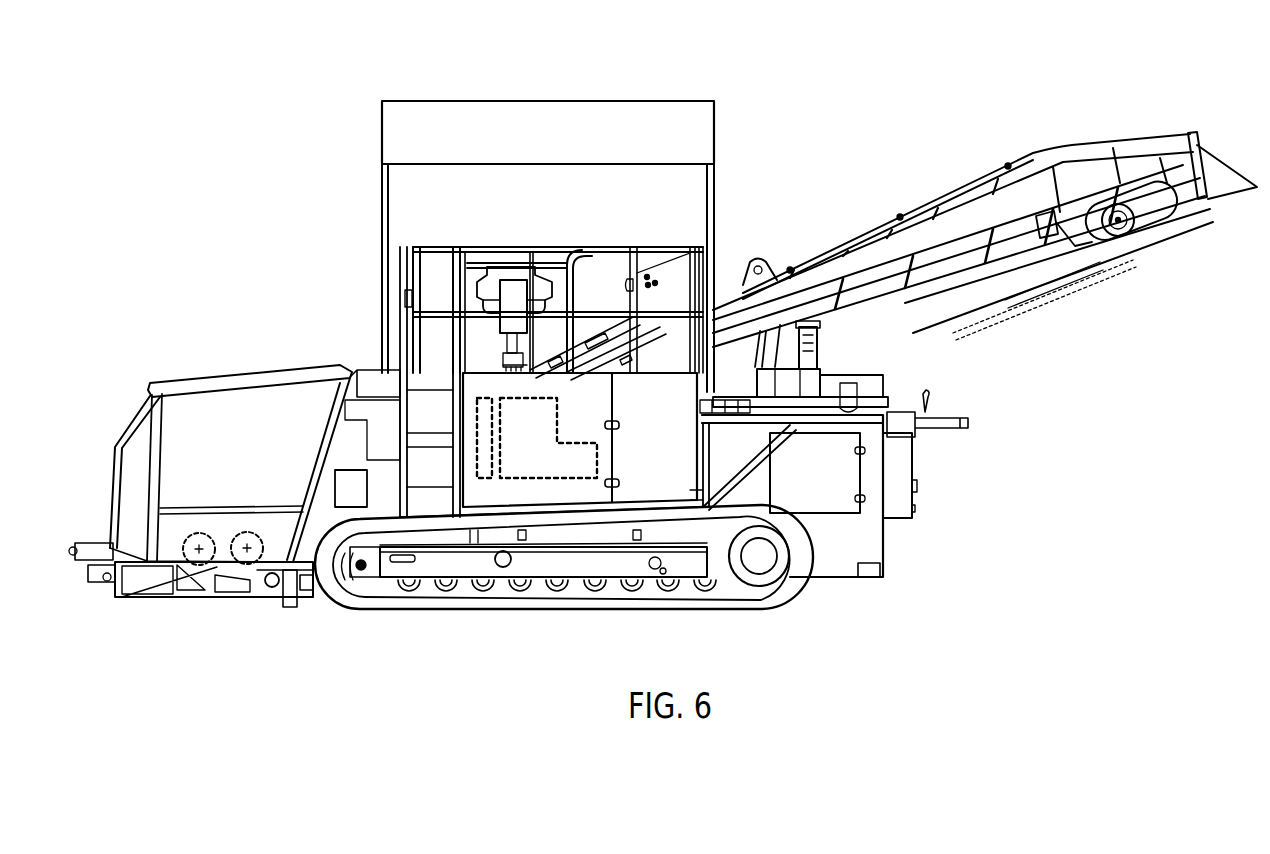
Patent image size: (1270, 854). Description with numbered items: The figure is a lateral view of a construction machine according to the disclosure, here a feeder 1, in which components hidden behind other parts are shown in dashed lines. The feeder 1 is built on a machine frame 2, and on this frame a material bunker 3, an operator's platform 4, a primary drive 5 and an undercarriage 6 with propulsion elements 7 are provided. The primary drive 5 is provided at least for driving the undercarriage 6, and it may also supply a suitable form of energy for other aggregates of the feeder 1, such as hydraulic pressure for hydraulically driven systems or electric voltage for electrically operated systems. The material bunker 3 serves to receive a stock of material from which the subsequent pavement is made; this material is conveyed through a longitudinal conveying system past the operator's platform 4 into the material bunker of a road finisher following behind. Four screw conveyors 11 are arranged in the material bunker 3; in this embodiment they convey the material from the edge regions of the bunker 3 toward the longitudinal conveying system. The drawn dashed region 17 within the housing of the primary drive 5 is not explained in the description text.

The feeder 1 is at (813, 146).
The machine frame 2 is at (699, 510).
The material bunker 3 is at (112, 462).
The operator's platform 4 is at (416, 101).
The primary drive 5 is at (572, 468).
The undercarriage 6 is at (408, 622).
The propulsion elements 7 is at (530, 603).
The screw conveyors 11 is at (241, 556).
The control unit 17 is at (481, 468).